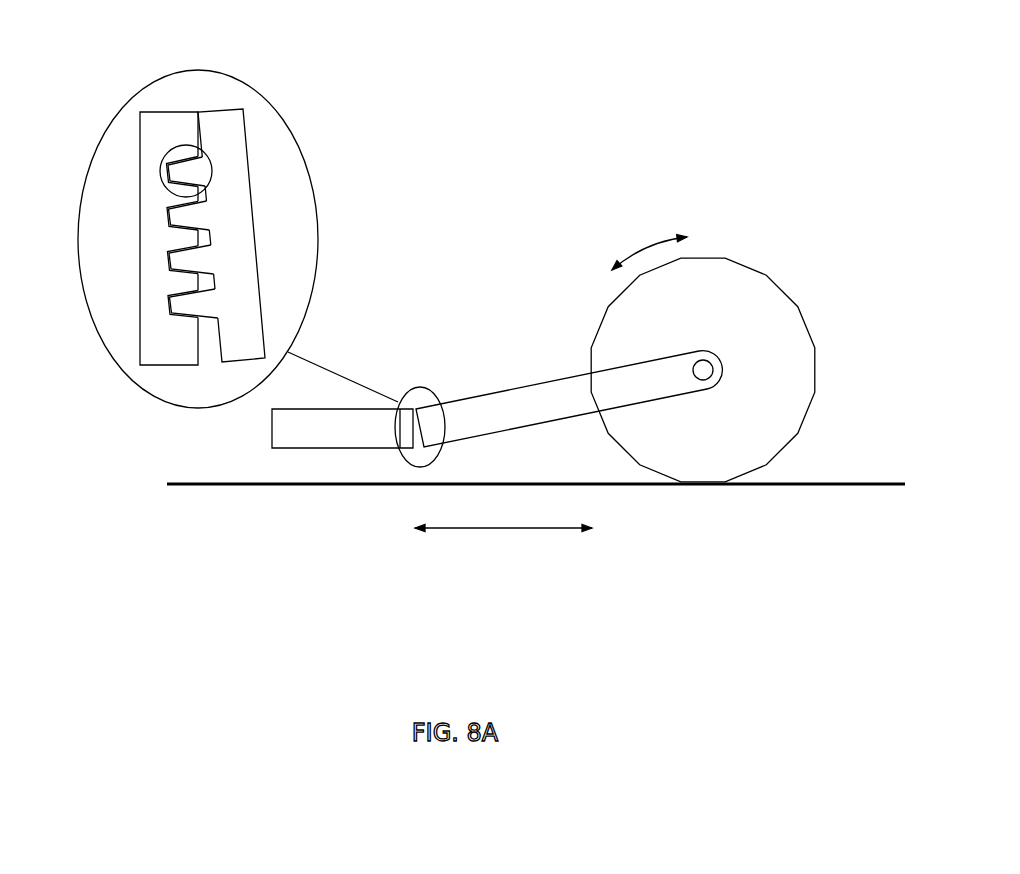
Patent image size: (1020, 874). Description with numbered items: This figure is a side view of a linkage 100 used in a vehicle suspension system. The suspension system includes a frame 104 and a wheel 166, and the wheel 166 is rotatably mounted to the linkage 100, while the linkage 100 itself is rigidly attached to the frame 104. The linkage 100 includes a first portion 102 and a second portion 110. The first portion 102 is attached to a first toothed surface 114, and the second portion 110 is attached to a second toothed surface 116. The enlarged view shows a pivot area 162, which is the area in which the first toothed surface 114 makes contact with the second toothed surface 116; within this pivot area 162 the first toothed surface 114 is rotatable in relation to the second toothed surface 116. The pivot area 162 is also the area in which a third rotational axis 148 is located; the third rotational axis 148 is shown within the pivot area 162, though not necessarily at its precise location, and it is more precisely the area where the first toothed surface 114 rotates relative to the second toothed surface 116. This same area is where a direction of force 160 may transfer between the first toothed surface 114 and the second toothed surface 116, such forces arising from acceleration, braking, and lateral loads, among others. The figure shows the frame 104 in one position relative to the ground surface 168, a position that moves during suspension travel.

The linkage 100 is at (432, 315).
The first portion 102 is at (150, 187).
The frame 104 is at (302, 427).
The second portion 110 is at (243, 283).
The first toothed surface 114 is at (182, 317).
The second toothed surface 116 is at (202, 272).
The third rotational axis 148 is at (178, 167).
The direction of force 160 is at (452, 529).
The pivot area 162 is at (212, 168).
The wheel 166 is at (747, 305).
The ground surface 168 is at (363, 484).